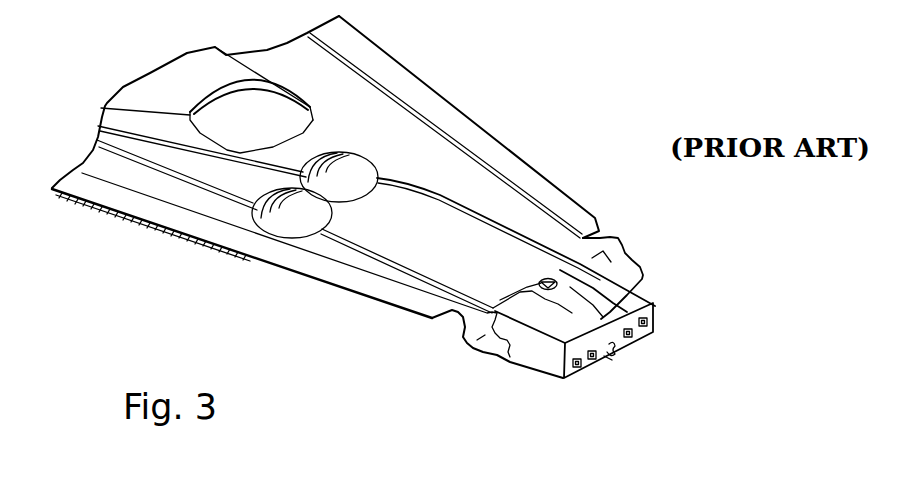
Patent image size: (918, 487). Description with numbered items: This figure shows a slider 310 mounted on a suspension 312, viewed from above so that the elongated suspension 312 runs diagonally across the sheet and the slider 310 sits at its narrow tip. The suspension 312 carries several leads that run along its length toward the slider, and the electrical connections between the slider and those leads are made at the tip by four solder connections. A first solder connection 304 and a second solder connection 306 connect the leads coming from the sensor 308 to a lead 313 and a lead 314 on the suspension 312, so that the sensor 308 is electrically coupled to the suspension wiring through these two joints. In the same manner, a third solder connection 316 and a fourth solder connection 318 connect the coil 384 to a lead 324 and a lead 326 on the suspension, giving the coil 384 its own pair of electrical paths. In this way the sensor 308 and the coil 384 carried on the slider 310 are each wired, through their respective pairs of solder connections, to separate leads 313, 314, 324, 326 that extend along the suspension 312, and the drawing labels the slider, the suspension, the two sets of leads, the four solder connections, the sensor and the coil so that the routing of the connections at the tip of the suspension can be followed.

The first solder connection 304 is at (557, 376).
The second solder connection 306 is at (655, 320).
The sensor 308 is at (610, 368).
The slider 310 is at (512, 377).
The suspension 312 is at (474, 118).
The lead 313 is at (378, 232).
The lead 314 is at (523, 228).
The third solder connection 316 is at (598, 365).
The fourth solder connection 318 is at (630, 337).
The lead 324 is at (400, 267).
The lead 326 is at (452, 201).
The coil 384 is at (623, 367).